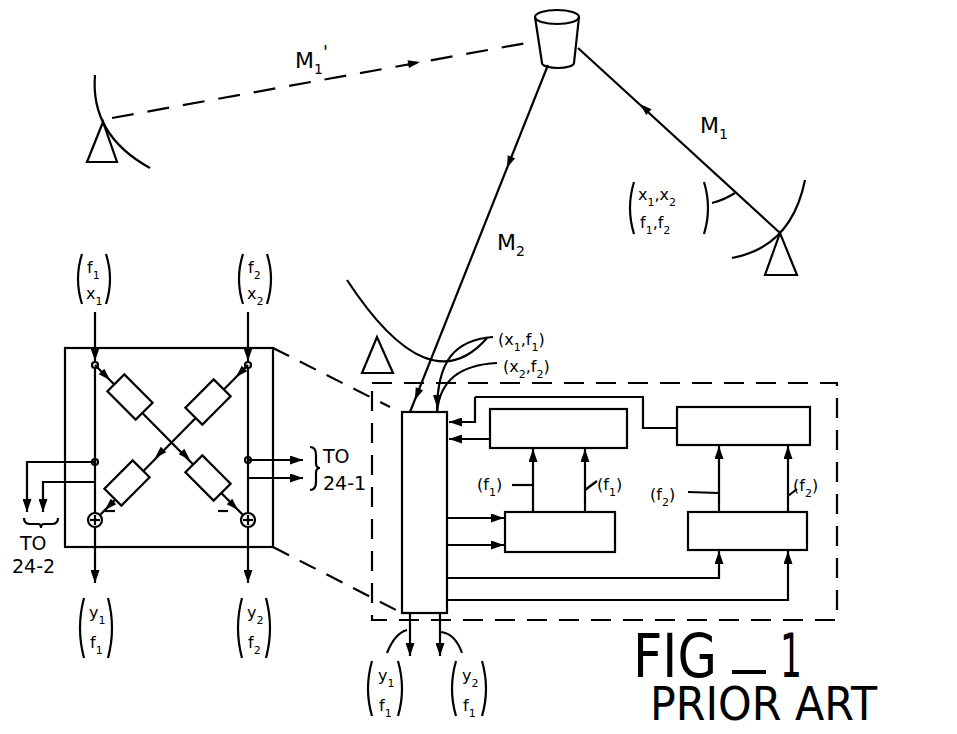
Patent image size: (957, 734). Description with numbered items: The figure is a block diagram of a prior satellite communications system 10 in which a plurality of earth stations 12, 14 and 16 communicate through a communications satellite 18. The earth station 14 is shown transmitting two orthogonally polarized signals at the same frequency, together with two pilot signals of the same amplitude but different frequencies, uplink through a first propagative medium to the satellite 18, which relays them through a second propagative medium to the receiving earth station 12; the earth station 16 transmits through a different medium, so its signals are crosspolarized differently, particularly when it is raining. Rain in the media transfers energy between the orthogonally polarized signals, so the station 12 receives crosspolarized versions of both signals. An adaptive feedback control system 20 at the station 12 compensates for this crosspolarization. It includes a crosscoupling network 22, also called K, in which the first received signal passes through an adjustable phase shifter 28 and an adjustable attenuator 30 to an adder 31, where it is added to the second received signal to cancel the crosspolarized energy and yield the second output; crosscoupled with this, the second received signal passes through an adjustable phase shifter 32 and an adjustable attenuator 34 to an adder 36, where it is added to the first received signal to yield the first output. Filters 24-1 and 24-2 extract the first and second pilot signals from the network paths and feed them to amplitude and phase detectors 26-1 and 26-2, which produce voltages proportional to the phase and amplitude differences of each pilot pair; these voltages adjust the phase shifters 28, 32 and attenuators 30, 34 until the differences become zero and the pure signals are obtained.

The satellite communications system 10 is at (690, 75).
The earth station 12 is at (347, 290).
The earth station 14 is at (800, 208).
The earth station 16 is at (92, 98).
The communications satellite 18 is at (580, 33).
The adaptive feedback control system 20 is at (716, 378).
The crosscoupling network 22 is at (402, 435).
The filter 24-1 is at (615, 528).
The filter 24-2 is at (807, 535).
The amplitude and phase detector 26-1 is at (624, 446).
The amplitude and phase detector 26-2 is at (810, 425).
The adjustable phase shifter 28 is at (152, 373).
The adjustable attenuator 30 is at (228, 452).
The adder 31 is at (241, 522).
The adjustable phase shifter 32 is at (200, 388).
The adjustable attenuator 34 is at (135, 500).
The adder 36 is at (101, 526).